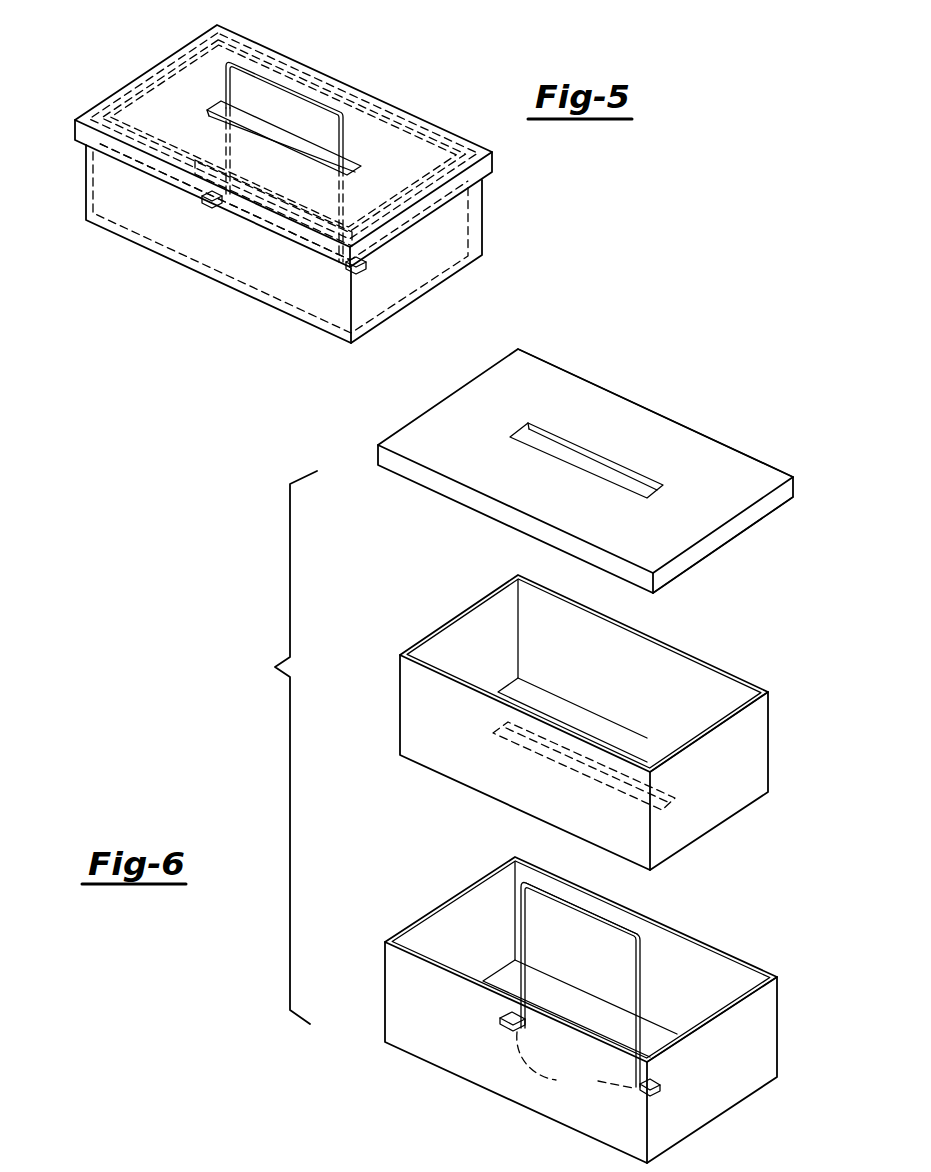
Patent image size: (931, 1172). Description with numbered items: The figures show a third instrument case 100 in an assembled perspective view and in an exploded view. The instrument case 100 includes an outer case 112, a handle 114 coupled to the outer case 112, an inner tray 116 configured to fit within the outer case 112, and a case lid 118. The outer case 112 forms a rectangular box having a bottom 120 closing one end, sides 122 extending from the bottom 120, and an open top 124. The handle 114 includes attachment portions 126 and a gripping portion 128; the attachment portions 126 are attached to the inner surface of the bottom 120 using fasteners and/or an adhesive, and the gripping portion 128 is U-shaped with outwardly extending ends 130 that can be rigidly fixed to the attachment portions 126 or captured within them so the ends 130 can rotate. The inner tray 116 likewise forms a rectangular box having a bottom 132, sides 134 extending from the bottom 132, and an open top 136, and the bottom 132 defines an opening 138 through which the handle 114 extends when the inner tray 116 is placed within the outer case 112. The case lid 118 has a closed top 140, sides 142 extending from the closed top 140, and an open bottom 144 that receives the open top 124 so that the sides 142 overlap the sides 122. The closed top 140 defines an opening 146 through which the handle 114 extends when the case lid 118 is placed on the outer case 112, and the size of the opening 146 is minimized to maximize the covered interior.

In FIG. 5, the instrument case 100 is at (146, 44).
In FIG. 6, the instrument case 100 is at (275, 747).
In FIG. 5, the outer case 112 is at (177, 228).
In FIG. 6, the outer case 112 is at (403, 990).
In FIG. 5, the handle 114 is at (302, 90).
In FIG. 6, the handle 114 is at (667, 935).
In FIG. 5, the inner tray 116 is at (233, 268).
In FIG. 6, the inner tray 116 is at (405, 717).
In FIG. 5, the case lid 118 is at (140, 107).
In FIG. 6, the case lid 118 is at (413, 435).
In FIG. 6, the bottom 120 is at (569, 1016).
In FIG. 6, the sides 122 is at (437, 948).
In FIG. 6, the open top 124 is at (728, 983).
In FIG. 5, the attachment portions 126 is at (284, 232).
In FIG. 6, the attachment portions 126 is at (496, 1016).
In FIG. 6, the gripping portion 128 is at (613, 922).
In FIG. 6, the ends 130 is at (575, 1064).
In FIG. 6, the bottom 132 is at (620, 738).
In FIG. 6, the sides 134 is at (462, 664).
In FIG. 6, the open top 136 is at (720, 700).
In FIG. 5, the opening 138 is at (305, 250).
In FIG. 6, the opening 138 is at (607, 790).
In FIG. 6, the closed top 140 is at (699, 494).
In FIG. 6, the sides 142 is at (466, 380).
In FIG. 6, the open bottom 144 is at (702, 565).
In FIG. 5, the opening 146 is at (300, 143).
In FIG. 6, the opening 146 is at (574, 452).